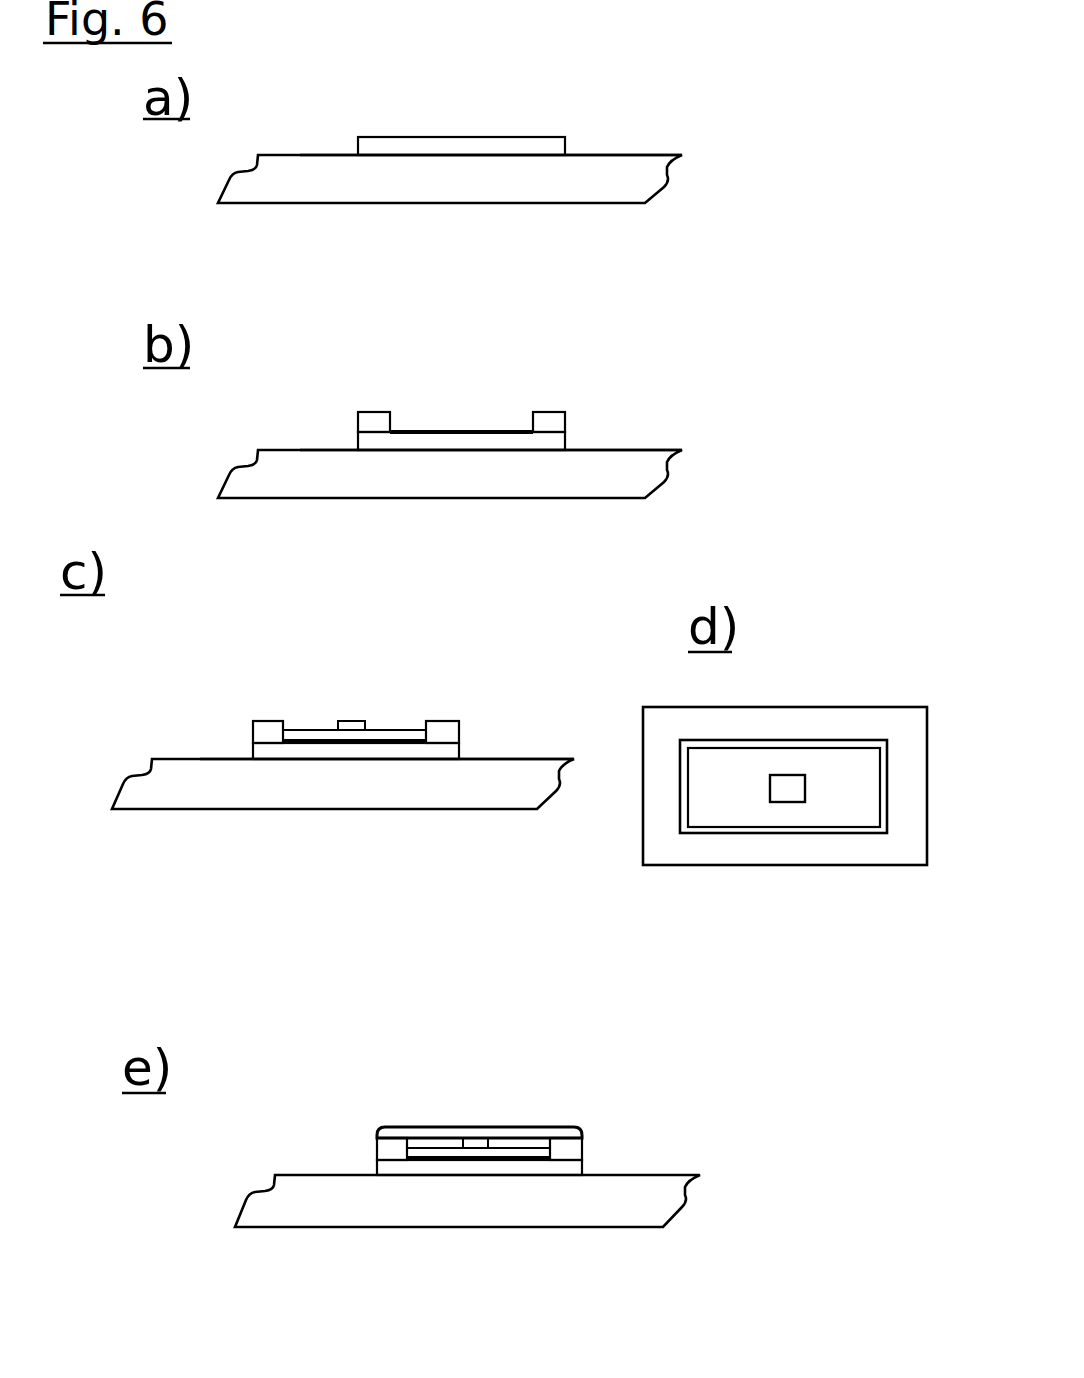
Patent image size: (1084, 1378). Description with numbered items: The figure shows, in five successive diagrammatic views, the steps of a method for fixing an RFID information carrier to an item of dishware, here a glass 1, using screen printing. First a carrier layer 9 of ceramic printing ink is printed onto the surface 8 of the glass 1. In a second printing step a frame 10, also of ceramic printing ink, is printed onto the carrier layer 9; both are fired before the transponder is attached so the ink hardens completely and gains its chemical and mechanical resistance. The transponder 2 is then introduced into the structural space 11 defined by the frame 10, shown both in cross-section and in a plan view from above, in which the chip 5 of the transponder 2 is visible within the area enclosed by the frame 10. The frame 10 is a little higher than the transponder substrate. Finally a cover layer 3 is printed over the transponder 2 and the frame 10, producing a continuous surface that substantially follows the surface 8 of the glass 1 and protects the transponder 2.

The glass 1 is at (582, 183).
The transponder 2 is at (585, 853).
The cover layer 3 is at (430, 1125).
The chip 5 is at (787, 788).
The surface of the glass 8 is at (640, 155).
The carrier layer 9 is at (533, 147).
The frame 10 is at (375, 422).
The structural space 11 is at (477, 339).